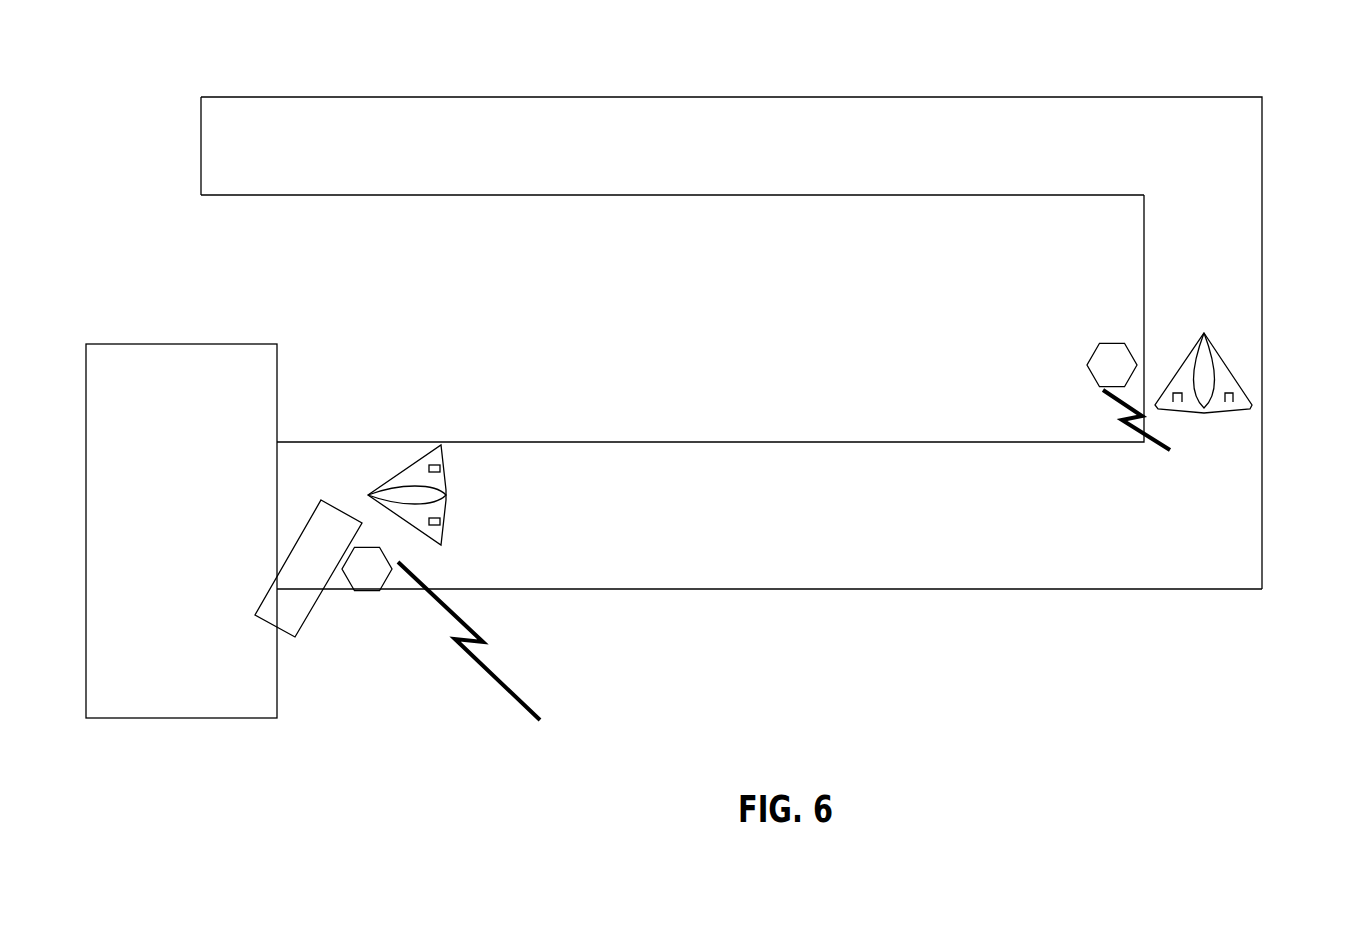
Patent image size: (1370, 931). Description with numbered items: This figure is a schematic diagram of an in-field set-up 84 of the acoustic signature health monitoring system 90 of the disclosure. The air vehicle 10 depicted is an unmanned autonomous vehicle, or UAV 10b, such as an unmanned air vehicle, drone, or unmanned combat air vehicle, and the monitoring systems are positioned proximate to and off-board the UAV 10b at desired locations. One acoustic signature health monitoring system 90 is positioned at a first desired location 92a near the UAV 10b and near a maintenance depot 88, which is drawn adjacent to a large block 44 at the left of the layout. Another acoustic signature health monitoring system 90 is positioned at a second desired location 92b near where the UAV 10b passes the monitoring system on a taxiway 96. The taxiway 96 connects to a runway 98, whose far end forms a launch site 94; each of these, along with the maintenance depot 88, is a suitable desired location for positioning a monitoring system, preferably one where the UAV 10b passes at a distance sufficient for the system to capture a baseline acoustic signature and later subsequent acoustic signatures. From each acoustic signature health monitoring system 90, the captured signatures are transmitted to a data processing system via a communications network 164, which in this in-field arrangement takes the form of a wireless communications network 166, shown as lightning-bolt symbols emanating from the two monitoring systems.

The air vehicle 10 is at (858, 430).
The unmanned autonomous vehicle (UAV) 10b is at (456, 429).
The ground station / control 44 is at (189, 538).
The in-field set-up 84 is at (1178, 78).
The maintenance depot 88 is at (322, 576).
The acoustic signature health monitoring system 90 is at (740, 496).
The first desired location 92a is at (349, 592).
The second desired location 92b is at (1138, 355).
The launch site 94 is at (200, 129).
The taxiway 96 is at (1085, 537).
The runway 98 is at (665, 155).
The communications network 164 is at (796, 564).
The wireless communications network 166 is at (496, 684).